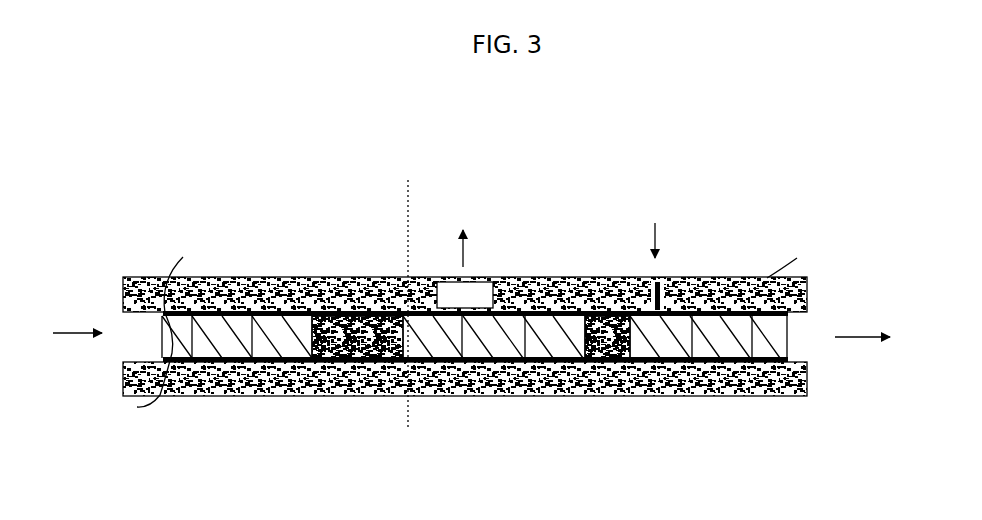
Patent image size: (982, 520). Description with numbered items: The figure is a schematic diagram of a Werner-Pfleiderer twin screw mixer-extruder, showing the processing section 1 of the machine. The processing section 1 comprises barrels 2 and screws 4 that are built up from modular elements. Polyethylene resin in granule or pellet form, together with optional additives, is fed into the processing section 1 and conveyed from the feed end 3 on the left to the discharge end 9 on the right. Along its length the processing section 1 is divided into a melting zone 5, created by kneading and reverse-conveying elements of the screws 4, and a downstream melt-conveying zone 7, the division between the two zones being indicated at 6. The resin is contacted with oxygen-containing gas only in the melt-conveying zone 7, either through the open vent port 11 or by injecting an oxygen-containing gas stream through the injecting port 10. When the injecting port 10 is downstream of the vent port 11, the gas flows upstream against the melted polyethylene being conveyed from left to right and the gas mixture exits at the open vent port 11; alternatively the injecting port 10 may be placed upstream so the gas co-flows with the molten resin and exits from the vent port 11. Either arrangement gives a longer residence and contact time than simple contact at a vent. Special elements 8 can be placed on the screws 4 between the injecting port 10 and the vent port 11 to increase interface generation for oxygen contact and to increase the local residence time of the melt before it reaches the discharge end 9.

The processing section 1 is at (845, 175).
The barrels 2 is at (130, 360).
The feed end 3 is at (108, 342).
The screws 4 is at (222, 343).
The melting zone 5 is at (408, 420).
The dividing line 6 is at (417, 397).
The melt-conveying zone 7 is at (408, 420).
The special elements 8 is at (640, 393).
The discharge end 9 is at (820, 343).
The injecting port 10 is at (660, 277).
The vent port 11 is at (475, 277).